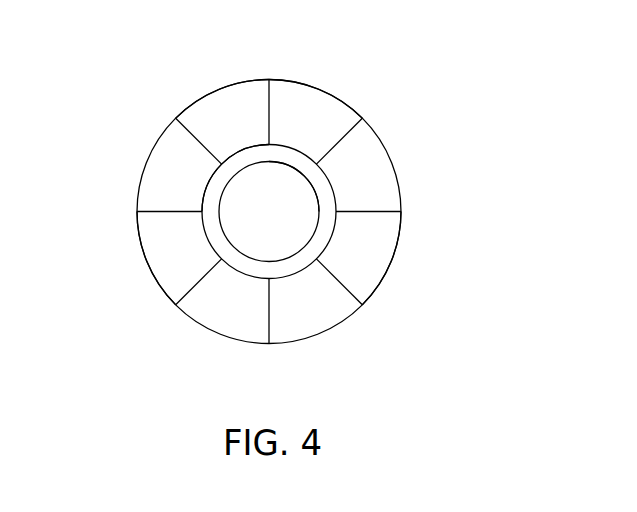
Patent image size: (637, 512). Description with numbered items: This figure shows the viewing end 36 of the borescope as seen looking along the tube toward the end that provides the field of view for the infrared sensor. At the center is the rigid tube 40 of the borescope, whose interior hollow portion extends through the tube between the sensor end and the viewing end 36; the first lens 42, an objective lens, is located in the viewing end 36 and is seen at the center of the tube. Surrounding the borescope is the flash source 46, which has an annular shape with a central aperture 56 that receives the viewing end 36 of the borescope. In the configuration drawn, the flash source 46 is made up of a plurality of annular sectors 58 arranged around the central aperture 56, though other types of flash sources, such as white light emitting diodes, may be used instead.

The viewing end 36 is at (195, 197).
The rigid tube 40 is at (284, 158).
The first lens 42 is at (233, 220).
The flash source 46 is at (410, 124).
The central aperture 56 is at (330, 189).
The annular sectors 58 is at (223, 115).